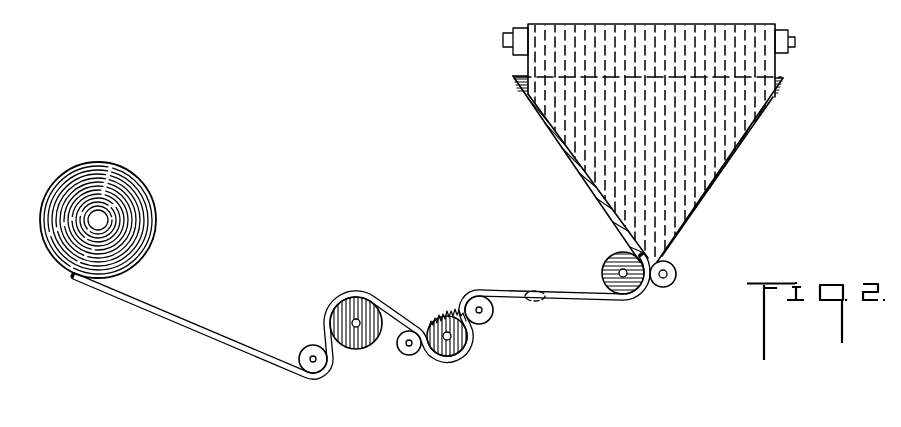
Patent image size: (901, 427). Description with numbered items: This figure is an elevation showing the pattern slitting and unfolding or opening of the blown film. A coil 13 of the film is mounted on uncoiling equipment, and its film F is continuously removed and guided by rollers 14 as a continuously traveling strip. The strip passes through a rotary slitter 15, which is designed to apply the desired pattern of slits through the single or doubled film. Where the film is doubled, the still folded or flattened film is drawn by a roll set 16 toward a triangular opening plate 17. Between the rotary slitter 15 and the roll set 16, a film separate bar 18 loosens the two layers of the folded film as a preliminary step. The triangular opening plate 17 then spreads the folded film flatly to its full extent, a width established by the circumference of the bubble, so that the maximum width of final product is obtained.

The coil 13 is at (147, 212).
The rollers 14 is at (364, 346).
The rotary slitter 15 is at (445, 313).
The roll set 16 is at (615, 262).
The triangular opening plate 17 is at (781, 83).
The film separate bar 18 is at (536, 303).
The film F is at (183, 310).